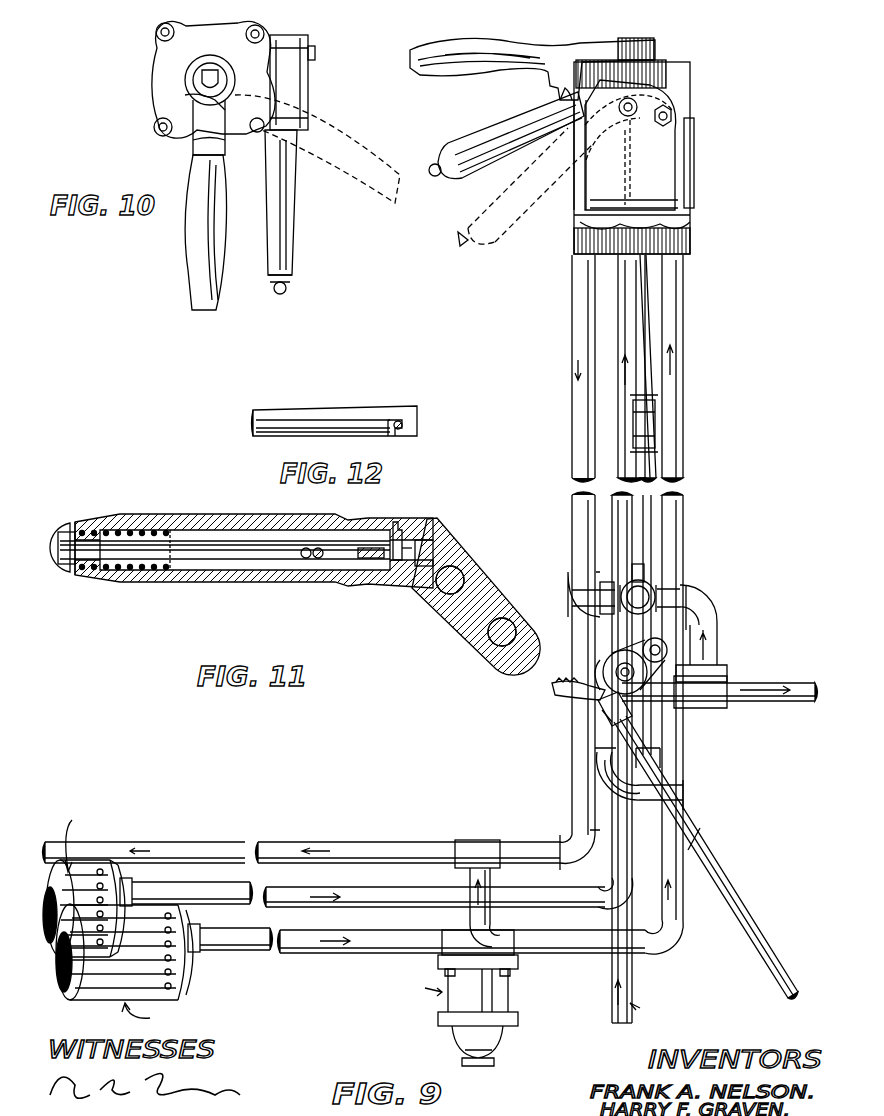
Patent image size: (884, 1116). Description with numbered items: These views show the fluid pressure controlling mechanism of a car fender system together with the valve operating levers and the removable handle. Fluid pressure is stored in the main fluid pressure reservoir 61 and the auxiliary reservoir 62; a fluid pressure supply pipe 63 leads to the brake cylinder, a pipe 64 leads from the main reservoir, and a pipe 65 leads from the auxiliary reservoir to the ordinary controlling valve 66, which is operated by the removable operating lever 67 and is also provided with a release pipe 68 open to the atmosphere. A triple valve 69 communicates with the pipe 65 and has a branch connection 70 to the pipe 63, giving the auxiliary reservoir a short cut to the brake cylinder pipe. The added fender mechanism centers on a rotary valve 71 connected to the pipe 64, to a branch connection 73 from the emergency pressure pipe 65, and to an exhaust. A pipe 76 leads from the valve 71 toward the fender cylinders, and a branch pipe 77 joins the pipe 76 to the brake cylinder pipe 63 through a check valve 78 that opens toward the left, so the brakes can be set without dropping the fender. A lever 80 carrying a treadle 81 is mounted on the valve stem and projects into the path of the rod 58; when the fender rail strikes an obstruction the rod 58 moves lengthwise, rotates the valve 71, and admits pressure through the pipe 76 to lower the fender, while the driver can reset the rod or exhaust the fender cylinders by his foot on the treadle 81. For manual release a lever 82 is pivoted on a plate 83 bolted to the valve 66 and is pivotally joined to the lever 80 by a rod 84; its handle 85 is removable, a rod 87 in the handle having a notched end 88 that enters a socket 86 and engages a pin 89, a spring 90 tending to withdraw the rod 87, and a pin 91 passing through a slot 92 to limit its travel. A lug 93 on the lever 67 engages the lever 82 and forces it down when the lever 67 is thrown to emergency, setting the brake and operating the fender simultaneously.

In FIG. 9, the rod 58 is at (730, 900).
In FIG. 9, the main fluid pressure reservoir 61 is at (148, 885).
In FIG. 9, the auxiliary reservoir 62 is at (210, 965).
In FIG. 9, the fluid pressure supply pipe 63 is at (572, 338).
In FIG. 9, the pipe 64 is at (632, 432).
In FIG. 9, the pipe 65 is at (683, 318).
In FIG. 10, the valve 66 is at (155, 62).
In FIG. 9, the valve 66 is at (690, 125).
In FIG. 10, the operating lever 67 is at (202, 288).
In FIG. 9, the operating lever 67 is at (485, 48).
In FIG. 9, the release pipe 68 is at (632, 990).
In FIG. 9, the triple valve 69 is at (512, 990).
In FIG. 9, the branch connection 70 is at (470, 888).
In FIG. 9, the valve 71 is at (603, 660).
In FIG. 9, the branch connection 73 is at (600, 780).
In FIG. 9, the pipe 76 is at (755, 702).
In FIG. 9, the branch pipe 77 is at (712, 642).
In FIG. 9, the check valve 78 is at (645, 594).
In FIG. 9, the lever 80 is at (592, 705).
In FIG. 9, the treadle 81 is at (552, 688).
In FIG. 11, the lever 82 is at (467, 627).
In FIG. 10, the plate 83 is at (300, 97).
In FIG. 9, the plate 83 is at (665, 162).
In FIG. 9, the rod 84 is at (652, 520).
In FIG. 10, the handle 85 is at (288, 253).
In FIG. 11, the handle 85 is at (205, 580).
In FIG. 9, the handle 85 is at (478, 140).
In FIG. 11, the socket 86 is at (428, 550).
In FIG. 12, the rod 87 is at (292, 415).
In FIG. 11, the rod 87 is at (195, 548).
In FIG. 11, the notched end 88 is at (384, 556).
In FIG. 12, the pin 89 is at (405, 425).
In FIG. 11, the pin 89 is at (398, 522).
In FIG. 11, the spring 90 is at (118, 577).
In FIG. 11, the pin 91 is at (318, 560).
In FIG. 11, the slot 92 is at (306, 560).
In FIG. 9, the lug 93 is at (565, 96).